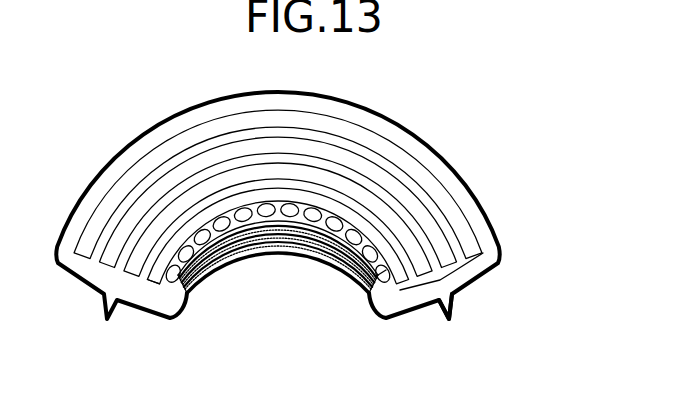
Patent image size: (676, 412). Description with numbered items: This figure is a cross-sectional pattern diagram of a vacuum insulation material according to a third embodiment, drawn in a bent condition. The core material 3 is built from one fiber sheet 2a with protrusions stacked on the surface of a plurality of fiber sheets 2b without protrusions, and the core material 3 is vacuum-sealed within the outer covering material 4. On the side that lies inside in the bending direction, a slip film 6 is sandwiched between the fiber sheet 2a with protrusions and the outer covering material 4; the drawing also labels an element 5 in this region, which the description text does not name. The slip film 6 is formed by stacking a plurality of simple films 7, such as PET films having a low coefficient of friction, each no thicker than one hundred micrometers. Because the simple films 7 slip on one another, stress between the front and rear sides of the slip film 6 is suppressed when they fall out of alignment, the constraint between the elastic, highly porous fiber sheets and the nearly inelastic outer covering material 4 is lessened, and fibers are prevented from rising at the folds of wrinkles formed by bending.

The fiber sheet with protrusions 2a is at (153, 272).
The fiber sheets without protrusions 2b is at (150, 222).
The core material 3 is at (465, 287).
The outer covering material 4 is at (470, 190).
The laminated core band 5 is at (220, 268).
The slip film 6 is at (376, 292).
The simple film 7 is at (203, 282).